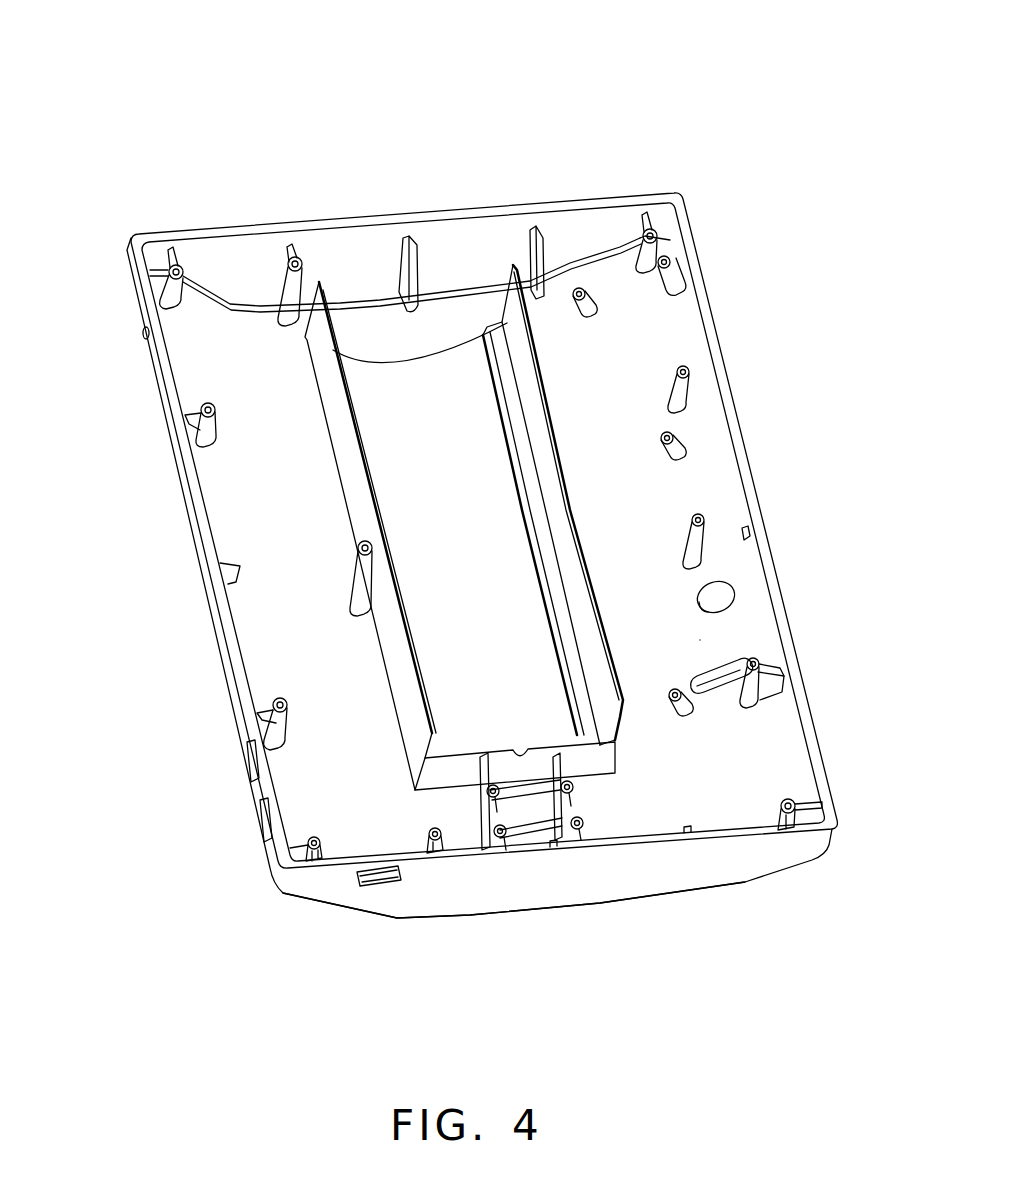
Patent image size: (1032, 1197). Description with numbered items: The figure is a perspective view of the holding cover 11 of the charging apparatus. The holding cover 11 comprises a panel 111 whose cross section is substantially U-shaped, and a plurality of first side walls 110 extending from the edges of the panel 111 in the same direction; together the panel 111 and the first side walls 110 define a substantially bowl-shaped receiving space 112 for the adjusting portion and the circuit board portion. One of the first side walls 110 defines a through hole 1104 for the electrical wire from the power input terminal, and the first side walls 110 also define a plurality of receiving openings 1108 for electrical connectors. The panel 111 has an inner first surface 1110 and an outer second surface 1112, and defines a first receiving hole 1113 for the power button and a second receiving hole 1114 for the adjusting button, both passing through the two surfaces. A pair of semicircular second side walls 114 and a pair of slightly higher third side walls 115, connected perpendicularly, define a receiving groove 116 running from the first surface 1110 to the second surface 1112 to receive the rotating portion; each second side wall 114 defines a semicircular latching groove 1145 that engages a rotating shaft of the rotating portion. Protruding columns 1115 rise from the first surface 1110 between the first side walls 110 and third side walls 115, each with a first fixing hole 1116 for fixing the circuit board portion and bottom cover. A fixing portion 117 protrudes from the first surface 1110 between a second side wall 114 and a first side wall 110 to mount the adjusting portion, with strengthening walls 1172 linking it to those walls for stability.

The holding cover 11 is at (510, 34).
The first side walls 110 is at (258, 237).
The panel 111 is at (372, 807).
The receiving space 112 is at (652, 490).
The second side walls 114 is at (463, 313).
The third side walls 115 is at (522, 312).
The receiving groove 116 is at (427, 435).
The fixing portion 117 is at (472, 872).
The through hole 1104 is at (140, 331).
The receiving openings 1108 is at (263, 817).
The first surface 1110 is at (757, 762).
The second surface 1112 is at (770, 877).
The first receiving hole 1113 is at (716, 598).
The second receiving hole 1114 is at (735, 660).
The protruding columns 1115 is at (677, 276).
The first fixing hole 1116 is at (669, 262).
The latching groove 1145 is at (410, 238).
The strengthening walls 1172 is at (478, 792).